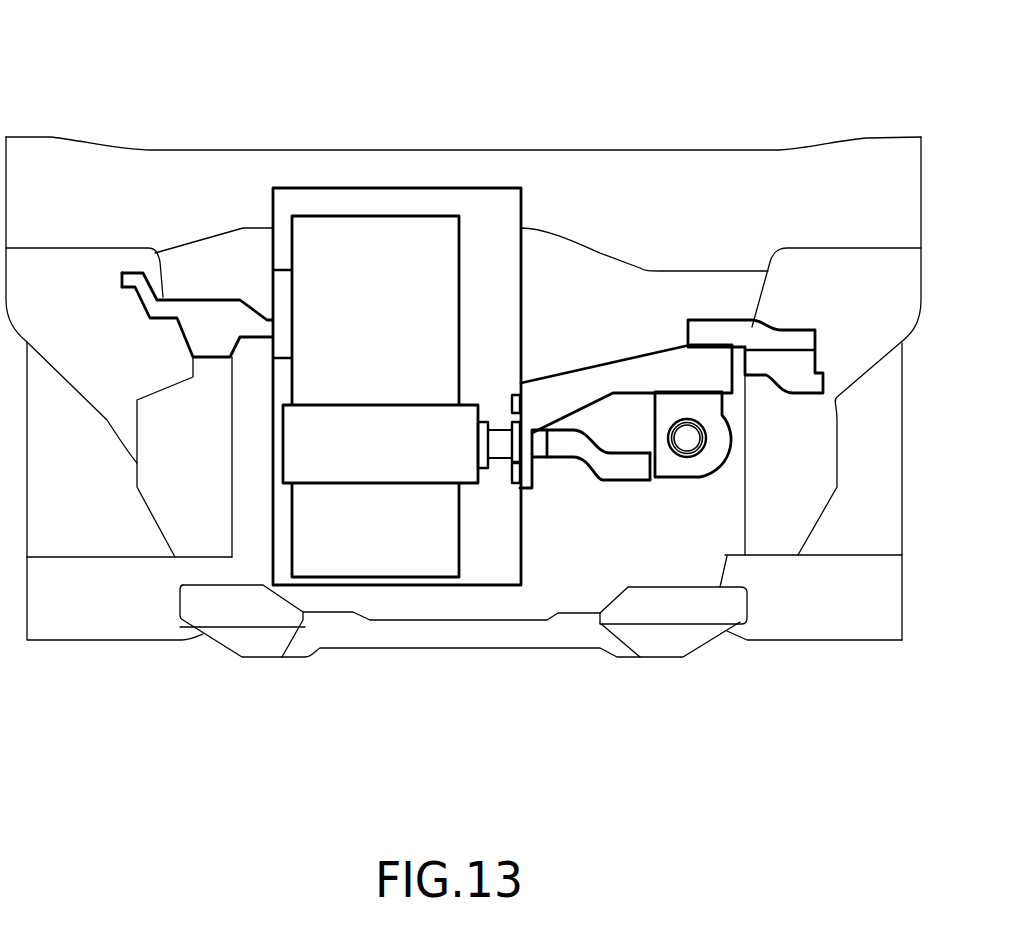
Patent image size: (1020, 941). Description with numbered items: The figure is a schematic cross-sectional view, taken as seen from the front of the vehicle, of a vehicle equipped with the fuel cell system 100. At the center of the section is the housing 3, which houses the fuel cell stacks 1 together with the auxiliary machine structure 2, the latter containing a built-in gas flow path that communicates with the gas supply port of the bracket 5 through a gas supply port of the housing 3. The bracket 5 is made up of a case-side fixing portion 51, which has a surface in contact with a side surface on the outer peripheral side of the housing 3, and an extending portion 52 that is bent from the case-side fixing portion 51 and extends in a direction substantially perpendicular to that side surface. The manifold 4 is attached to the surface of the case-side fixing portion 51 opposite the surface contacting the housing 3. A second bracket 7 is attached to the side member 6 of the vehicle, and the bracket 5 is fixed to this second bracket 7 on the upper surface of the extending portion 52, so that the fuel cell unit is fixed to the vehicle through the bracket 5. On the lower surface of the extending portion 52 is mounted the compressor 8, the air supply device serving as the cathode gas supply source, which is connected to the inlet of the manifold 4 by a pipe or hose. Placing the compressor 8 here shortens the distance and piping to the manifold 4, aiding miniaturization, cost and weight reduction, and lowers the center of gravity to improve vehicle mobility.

The fuel cell system 100 is at (615, 105).
The fuel cell stack 1 is at (373, 282).
The auxiliary machine structure 2 is at (350, 455).
The housing 3 is at (273, 500).
The manifold 4 is at (543, 470).
The bracket 5 is at (587, 437).
The case-side fixing portion 51 is at (525, 480).
The extending portion 52 is at (627, 373).
The side member 6 is at (790, 467).
The second bracket 7 is at (752, 333).
The compressor 8 is at (692, 468).